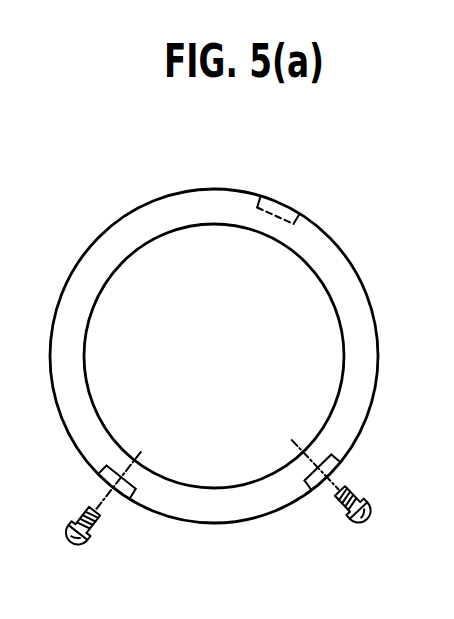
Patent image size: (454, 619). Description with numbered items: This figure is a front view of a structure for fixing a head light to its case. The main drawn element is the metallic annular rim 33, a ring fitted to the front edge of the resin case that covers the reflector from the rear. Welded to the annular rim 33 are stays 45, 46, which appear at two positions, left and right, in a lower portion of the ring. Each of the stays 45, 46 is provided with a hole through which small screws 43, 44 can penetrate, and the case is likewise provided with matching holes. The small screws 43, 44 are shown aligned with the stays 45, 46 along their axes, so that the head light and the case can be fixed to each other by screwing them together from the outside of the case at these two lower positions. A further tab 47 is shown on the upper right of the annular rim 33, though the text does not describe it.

The annular rim 33 is at (180, 208).
The tab 47 is at (280, 208).
The stay 45 is at (340, 466).
The stay 46 is at (104, 478).
The small screw 43 is at (347, 524).
The small screw 44 is at (92, 553).